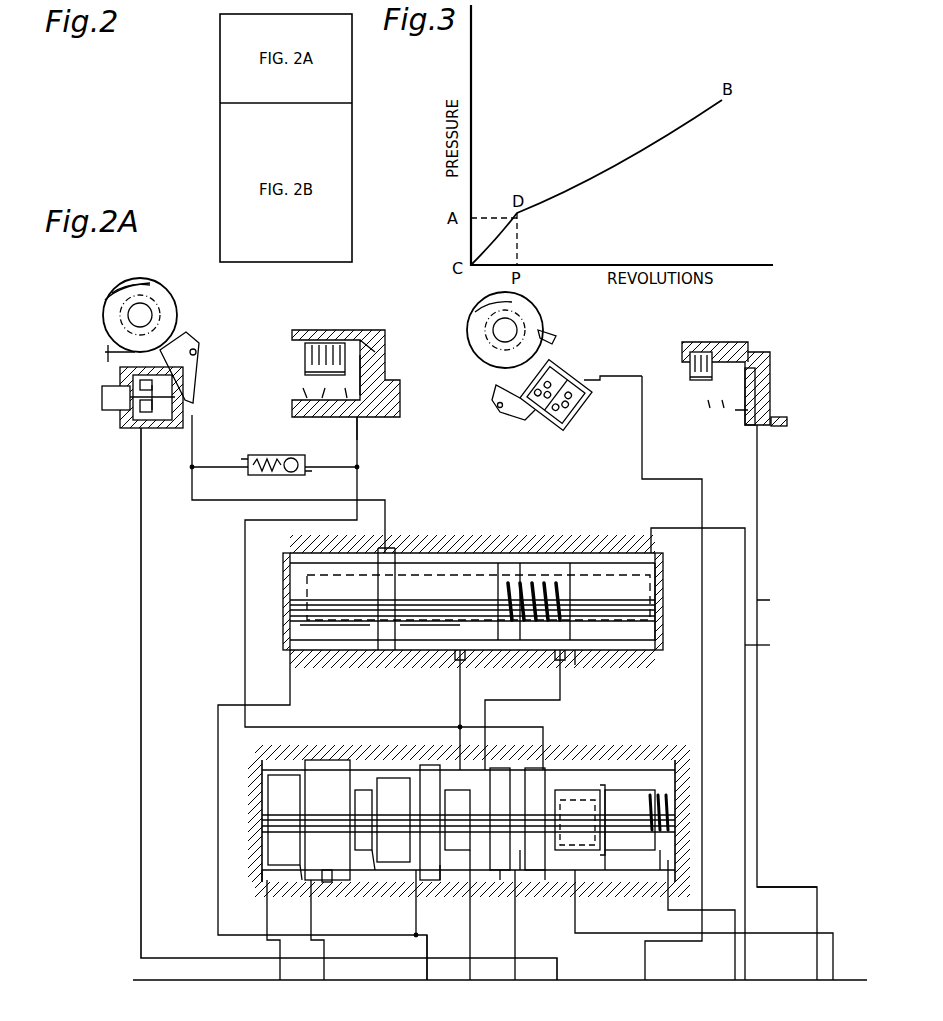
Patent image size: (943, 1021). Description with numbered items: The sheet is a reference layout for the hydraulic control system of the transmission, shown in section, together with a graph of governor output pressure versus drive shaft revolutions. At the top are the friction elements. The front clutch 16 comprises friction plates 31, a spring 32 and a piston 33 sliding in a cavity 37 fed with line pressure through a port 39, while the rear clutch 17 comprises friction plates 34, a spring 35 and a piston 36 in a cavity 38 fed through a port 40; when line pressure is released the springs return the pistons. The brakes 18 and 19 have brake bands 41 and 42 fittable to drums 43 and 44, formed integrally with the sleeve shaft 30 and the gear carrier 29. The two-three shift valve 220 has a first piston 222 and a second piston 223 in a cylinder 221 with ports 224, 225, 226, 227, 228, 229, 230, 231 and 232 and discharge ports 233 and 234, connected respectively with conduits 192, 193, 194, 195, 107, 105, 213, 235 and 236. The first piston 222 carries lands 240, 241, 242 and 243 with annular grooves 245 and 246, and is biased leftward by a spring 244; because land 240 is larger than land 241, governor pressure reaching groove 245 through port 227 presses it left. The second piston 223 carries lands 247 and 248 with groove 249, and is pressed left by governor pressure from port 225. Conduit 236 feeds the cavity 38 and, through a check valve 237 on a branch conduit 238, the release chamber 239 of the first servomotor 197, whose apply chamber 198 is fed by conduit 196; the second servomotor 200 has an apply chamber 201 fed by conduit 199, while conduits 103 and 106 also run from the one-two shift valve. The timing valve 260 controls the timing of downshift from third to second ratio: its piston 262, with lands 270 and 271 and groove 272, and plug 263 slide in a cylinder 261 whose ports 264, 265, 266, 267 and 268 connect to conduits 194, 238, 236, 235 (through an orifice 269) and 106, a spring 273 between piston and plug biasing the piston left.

The front clutch 16 is at (730, 327).
The rear clutch 17 is at (372, 313).
The brake 18 is at (160, 281).
The brake 19 is at (538, 298).
The gear carrier 29 is at (493, 333).
The sleeve shaft 30 is at (128, 318).
The friction plates 31 is at (704, 350).
The spring 32 is at (705, 402).
The piston 33 is at (762, 356).
The friction plates 34 is at (330, 340).
The spring 35 is at (330, 410).
The piston 36 is at (378, 350).
The cavity 37 is at (760, 392).
The cavity 38 is at (372, 376).
The port 39 is at (760, 430).
The port 40 is at (364, 422).
The brake band 41 is at (176, 316).
The brake band 42 is at (544, 322).
The drum 43 is at (122, 290).
The drum 44 is at (478, 310).
The conduit 103 is at (815, 958).
The conduit 105 is at (588, 930).
The conduit 106 is at (774, 644).
The conduit 107 is at (518, 955).
The conduit 192 is at (278, 962).
The conduit 193 is at (322, 966).
The conduit 194 is at (222, 707).
The conduit 195 is at (492, 925).
The conduit 196 is at (148, 668).
The first servomotor 197 is at (92, 398).
The apply chamber 198 is at (138, 422).
The conduit 199 is at (644, 456).
The second servomotor 200 is at (578, 355).
The apply chamber 201 is at (600, 375).
The conduit 213 is at (672, 885).
The 2-3 shift valve 220 is at (590, 711).
The cylinder 221 is at (368, 790).
The first piston 222 is at (448, 775).
The second piston 223 is at (322, 775).
The port 224 is at (262, 880).
The port 225 is at (300, 880).
The port 226 is at (415, 905).
The port 227 is at (442, 878).
The port 228 is at (502, 878).
The port 229 is at (548, 882).
The port 230 is at (668, 858).
The port 231 is at (500, 775).
The port 232 is at (540, 770).
The discharge port 233 is at (374, 870).
The discharge port 234 is at (606, 870).
The conduit 235 is at (487, 708).
The conduit 236 is at (360, 468).
The check valve 237 is at (275, 448).
The branch conduit 238 is at (194, 464).
The release chamber 239 is at (181, 430).
The land 240 is at (442, 820).
The land 241 is at (610, 785).
The land 242 is at (577, 820).
The land 243 is at (630, 820).
The spring 244 is at (672, 812).
The annular groove 245 is at (472, 868).
The annular groove 246 is at (524, 868).
The land 247 is at (286, 820).
The land 248 is at (395, 790).
The annular groove 249 is at (328, 884).
The timing valve 260 is at (484, 521).
The cylinder 261 is at (440, 566).
The piston 262 is at (470, 572).
The plug 263 is at (600, 563).
The port 264 is at (286, 656).
The port 265 is at (396, 550).
The port 266 is at (458, 652).
The port 267 is at (558, 660).
The port 268 is at (660, 545).
The orifice 269 is at (577, 663).
The land 270 is at (332, 625).
The land 271 is at (475, 645).
The annular groove 272 is at (412, 628).
The spring 273 is at (522, 577).